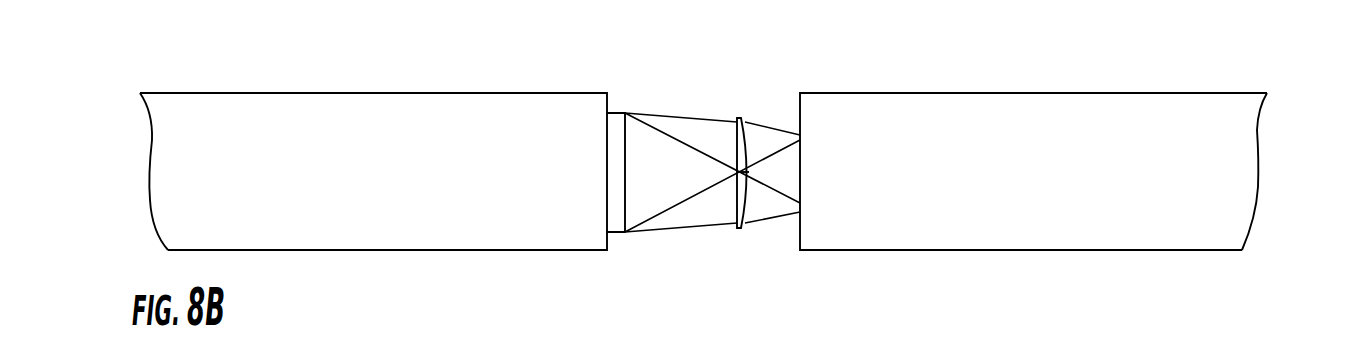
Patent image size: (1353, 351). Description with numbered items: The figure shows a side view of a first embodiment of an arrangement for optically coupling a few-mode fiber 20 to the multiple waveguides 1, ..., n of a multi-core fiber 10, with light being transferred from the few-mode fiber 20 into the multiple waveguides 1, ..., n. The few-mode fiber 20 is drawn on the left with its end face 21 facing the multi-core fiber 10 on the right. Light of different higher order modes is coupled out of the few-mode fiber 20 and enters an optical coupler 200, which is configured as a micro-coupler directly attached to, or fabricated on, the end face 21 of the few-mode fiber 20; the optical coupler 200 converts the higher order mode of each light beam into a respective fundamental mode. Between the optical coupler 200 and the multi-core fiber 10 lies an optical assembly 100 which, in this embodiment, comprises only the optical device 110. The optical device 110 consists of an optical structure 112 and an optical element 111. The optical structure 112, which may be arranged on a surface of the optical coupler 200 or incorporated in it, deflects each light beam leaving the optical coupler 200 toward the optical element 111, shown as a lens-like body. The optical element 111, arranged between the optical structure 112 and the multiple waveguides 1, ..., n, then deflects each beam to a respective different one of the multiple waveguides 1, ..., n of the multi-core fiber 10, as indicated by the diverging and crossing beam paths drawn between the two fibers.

The multi-core fiber 10 is at (912, 93).
The few-mode fiber 20 is at (393, 93).
The surface of second optical element 21 is at (527, 232).
The multiple waveguides 1 is at (887, 232).
The optical assembly 100 is at (711, 165).
The optical device 110 is at (744, 157).
The optical element 111 is at (740, 228).
The optical structure 112 is at (638, 230).
The optical coupler 200 is at (617, 220).